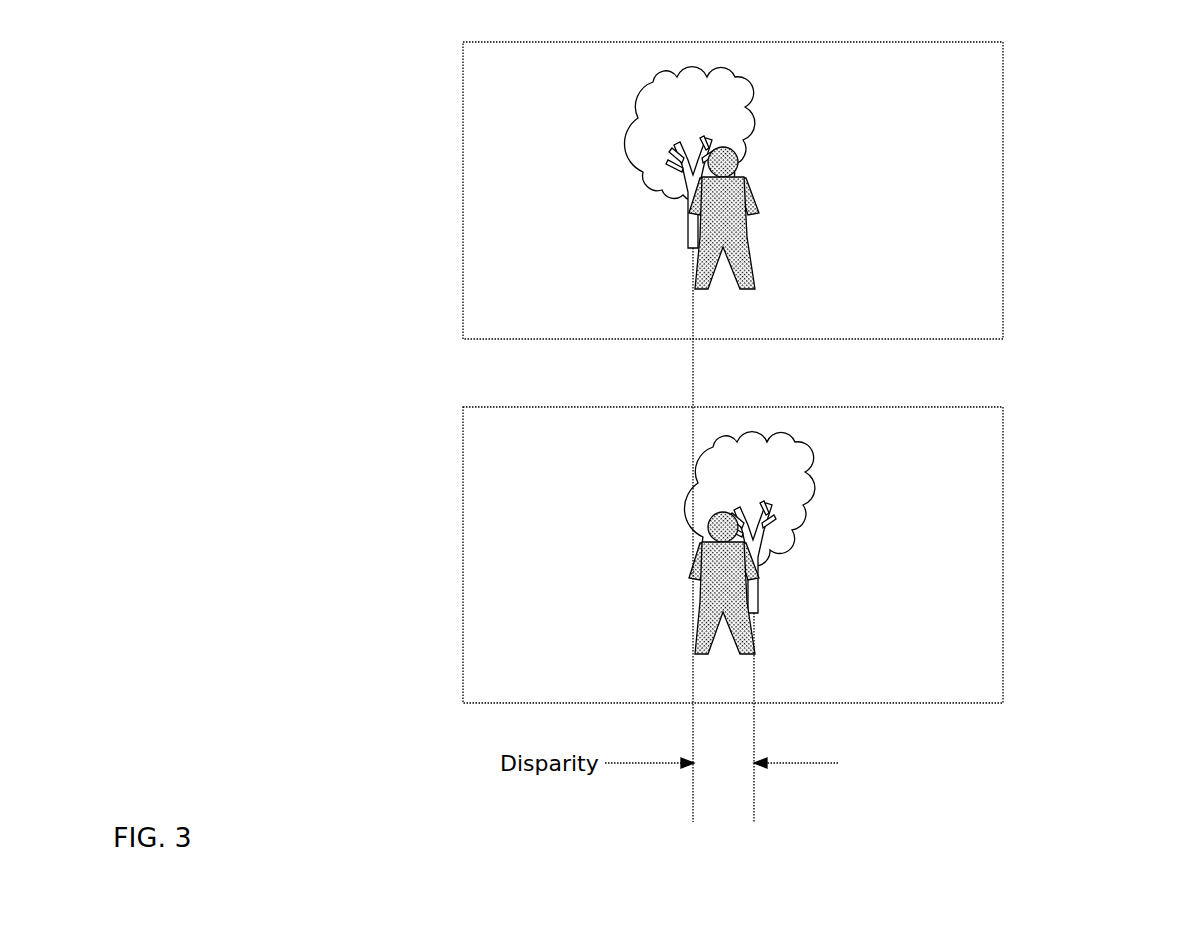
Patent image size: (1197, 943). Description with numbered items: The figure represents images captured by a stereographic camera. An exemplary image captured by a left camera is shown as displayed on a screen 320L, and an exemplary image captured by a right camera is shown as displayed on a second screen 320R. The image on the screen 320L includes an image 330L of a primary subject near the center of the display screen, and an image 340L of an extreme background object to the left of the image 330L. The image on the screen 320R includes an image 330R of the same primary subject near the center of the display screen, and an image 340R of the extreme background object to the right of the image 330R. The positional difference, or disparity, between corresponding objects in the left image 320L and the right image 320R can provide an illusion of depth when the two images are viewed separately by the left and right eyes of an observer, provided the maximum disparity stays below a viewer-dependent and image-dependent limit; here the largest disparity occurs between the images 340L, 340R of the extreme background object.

The screen 320L is at (1003, 162).
The second screen 320R is at (1003, 515).
The image of a primary subject 330L is at (757, 203).
The image of the primary subject 330R is at (691, 575).
The image of an extreme background object 340L is at (632, 137).
The image of the extreme background object 340R is at (815, 483).